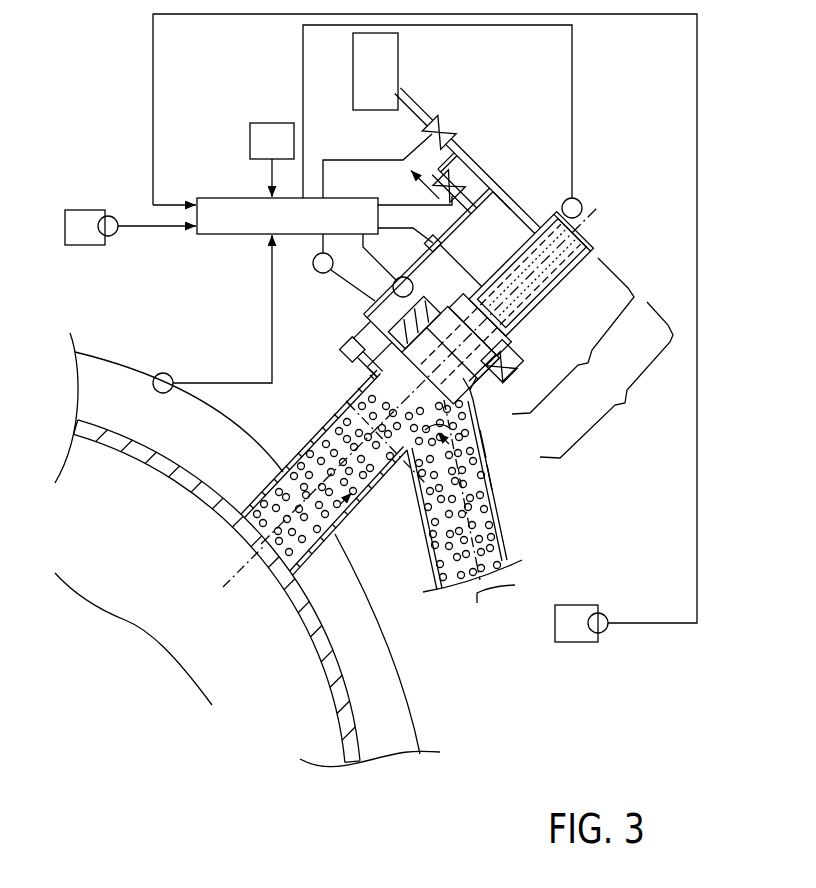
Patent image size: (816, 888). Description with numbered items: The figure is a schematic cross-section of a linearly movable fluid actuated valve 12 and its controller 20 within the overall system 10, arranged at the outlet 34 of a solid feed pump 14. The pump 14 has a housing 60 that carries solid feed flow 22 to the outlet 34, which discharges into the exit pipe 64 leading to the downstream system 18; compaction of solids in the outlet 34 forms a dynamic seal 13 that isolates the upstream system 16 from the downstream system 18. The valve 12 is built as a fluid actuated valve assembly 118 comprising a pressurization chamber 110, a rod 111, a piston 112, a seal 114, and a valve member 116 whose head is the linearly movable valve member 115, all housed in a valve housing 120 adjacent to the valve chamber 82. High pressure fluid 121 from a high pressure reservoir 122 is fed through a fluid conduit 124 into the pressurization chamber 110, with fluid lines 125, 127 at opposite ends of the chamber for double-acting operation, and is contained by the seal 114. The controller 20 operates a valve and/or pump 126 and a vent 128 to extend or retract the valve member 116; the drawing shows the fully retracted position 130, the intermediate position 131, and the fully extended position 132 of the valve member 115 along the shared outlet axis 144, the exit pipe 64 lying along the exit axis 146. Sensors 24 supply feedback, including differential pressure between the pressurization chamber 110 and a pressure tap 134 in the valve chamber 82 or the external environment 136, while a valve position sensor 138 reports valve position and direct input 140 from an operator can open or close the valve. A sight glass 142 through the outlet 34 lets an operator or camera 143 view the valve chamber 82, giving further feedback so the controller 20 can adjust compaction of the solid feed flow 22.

The combustion system 10 is at (124, 147).
The fluid actuated valve 12 is at (606, 380).
The dynamic seal 13 is at (368, 372).
The solid feed pump 14 is at (102, 546).
The upstream system 16 is at (72, 238).
The downstream system 18 is at (562, 636).
The controller 20 is at (365, 229).
The solid feed flow 22 is at (354, 512).
The sensors 24 is at (114, 238).
The outlet 34 is at (306, 447).
The housing 60 is at (400, 653).
The exit pipe 64 is at (510, 544).
The valve chamber 82 is at (313, 447).
The pressurization chamber 110 is at (597, 241).
The rod 111 is at (361, 344).
The piston 112 is at (528, 297).
The seal 114 is at (506, 356).
The linearly movable valve member 115 is at (496, 478).
The valve member 116 is at (497, 504).
The fluid actuated valve assembly 118 is at (573, 336).
The valve housing 120 is at (599, 232).
The high pressure fluid 121 is at (362, 83).
The high pressure reservoir 122 is at (402, 62).
The fluid conduit 124 is at (524, 206).
The fluid line 125 is at (541, 214).
The valve and/or pump 126 is at (451, 127).
The fluid line 127 is at (458, 285).
The vent 128 is at (436, 178).
The fully retracted position 130 is at (487, 471).
The intermediate position 131 is at (357, 322).
The fully extended position 132 is at (346, 402).
The pressure tap 134 is at (399, 351).
The external environment 136 is at (286, 294).
The valve position sensor 138 is at (525, 318).
The direct input 140 is at (258, 155).
The sight glass 142 is at (362, 356).
The camera 143 is at (365, 336).
The outlet axis 144 is at (240, 561).
The exit axis 146 is at (513, 588).